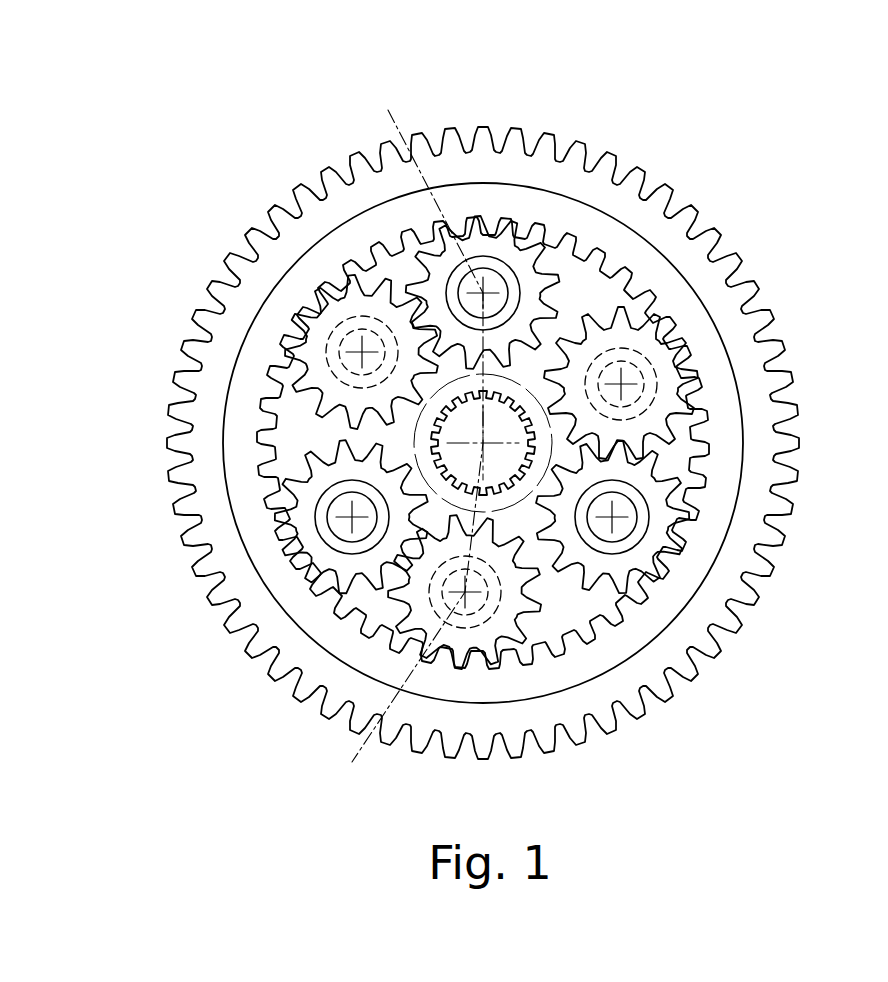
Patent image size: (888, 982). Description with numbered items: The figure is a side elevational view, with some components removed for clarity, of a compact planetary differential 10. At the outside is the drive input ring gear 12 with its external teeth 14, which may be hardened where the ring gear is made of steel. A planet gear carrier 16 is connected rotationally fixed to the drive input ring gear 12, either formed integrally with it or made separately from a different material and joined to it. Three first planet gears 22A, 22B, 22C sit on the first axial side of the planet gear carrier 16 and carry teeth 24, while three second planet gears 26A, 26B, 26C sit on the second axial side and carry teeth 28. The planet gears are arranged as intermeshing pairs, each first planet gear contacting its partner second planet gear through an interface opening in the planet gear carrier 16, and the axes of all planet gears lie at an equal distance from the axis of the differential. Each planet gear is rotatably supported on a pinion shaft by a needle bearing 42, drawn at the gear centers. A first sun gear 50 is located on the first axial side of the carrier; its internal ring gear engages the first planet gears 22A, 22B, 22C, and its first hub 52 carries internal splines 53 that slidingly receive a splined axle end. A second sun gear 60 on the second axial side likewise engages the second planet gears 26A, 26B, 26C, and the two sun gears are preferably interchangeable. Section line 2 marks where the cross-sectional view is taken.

The section line 2- 2 is at (388, 110).
The compact planetary differential 10 is at (617, 92).
The drive input ring gear 12 is at (483, 424).
The external teeth 14 is at (643, 175).
The planet gear carrier 16 is at (493, 443).
The first planet gear 22A is at (592, 258).
The first planet gear 22B is at (747, 567).
The first planet gear 22C is at (310, 560).
The teeth 24 is at (592, 258).
The second planet gear 26A is at (307, 377).
The second planet gear 26B is at (695, 460).
The second planet gear 26C is at (455, 612).
The teeth 28 is at (680, 433).
The needle bearing 42 is at (347, 340).
The first sun gear 50 is at (547, 230).
The first hub 52 is at (399, 578).
The internal splines 53 is at (500, 492).
The second sun gear 60 is at (287, 353).